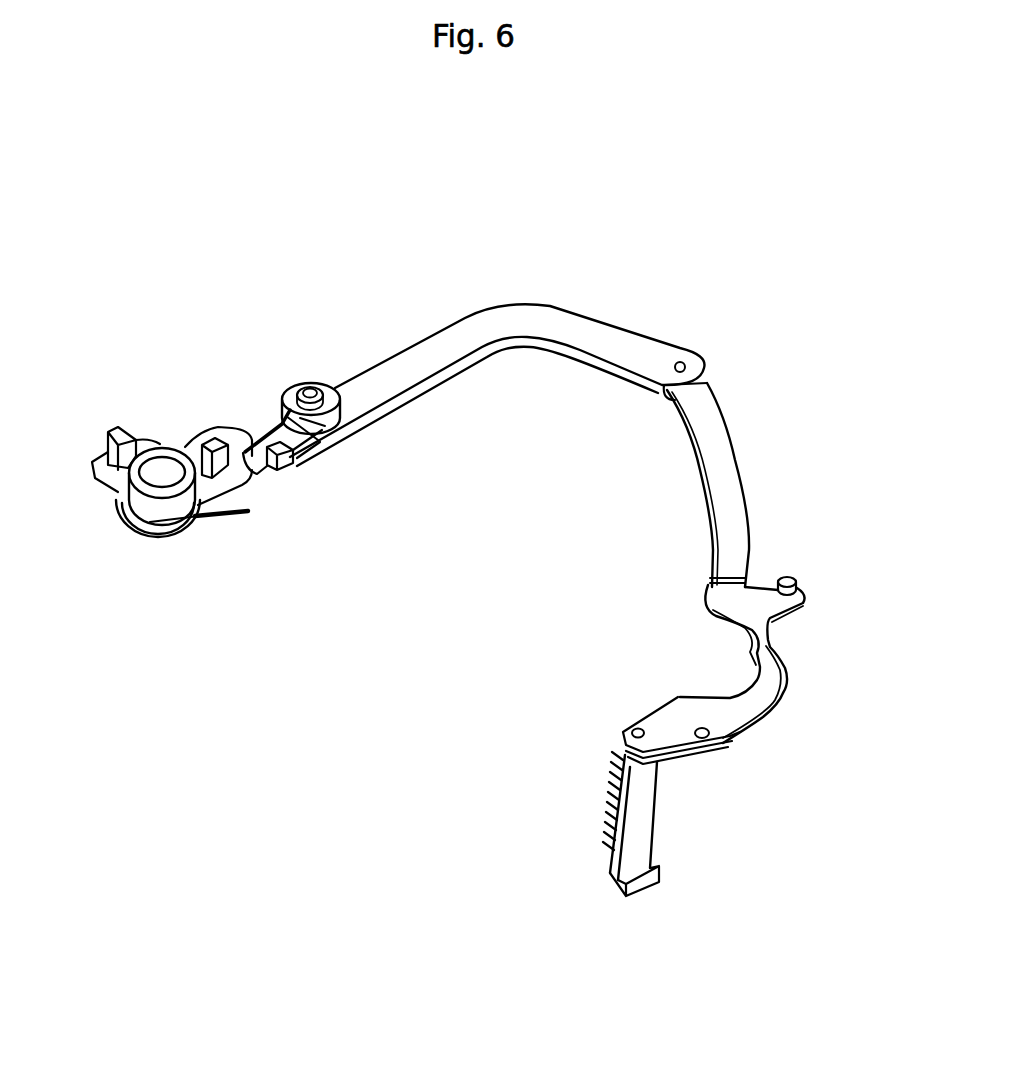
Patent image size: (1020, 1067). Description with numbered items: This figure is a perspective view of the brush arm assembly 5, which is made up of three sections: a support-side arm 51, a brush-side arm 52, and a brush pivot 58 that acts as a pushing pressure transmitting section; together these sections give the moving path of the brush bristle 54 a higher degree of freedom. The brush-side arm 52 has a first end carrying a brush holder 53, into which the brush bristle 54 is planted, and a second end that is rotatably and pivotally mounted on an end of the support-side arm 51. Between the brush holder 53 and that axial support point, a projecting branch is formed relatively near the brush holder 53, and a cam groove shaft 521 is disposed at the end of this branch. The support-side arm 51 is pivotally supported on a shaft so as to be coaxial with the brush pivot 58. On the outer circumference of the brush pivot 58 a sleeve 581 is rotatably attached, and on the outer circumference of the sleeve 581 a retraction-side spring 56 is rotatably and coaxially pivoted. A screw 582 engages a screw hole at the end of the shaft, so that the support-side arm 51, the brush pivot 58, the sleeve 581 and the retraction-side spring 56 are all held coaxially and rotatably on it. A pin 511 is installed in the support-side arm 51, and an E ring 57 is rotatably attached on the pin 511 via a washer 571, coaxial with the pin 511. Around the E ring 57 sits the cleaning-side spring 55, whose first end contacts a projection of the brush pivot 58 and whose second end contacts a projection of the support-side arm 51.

The brush arm assembly 5 is at (738, 216).
The support-side arm 51 is at (492, 326).
The pin 511 is at (311, 390).
The brush-side arm 52 is at (723, 430).
The cam groove shaft 521 is at (787, 577).
The brush holder 53 is at (643, 838).
The brush bristle 54 is at (605, 805).
The cleaning-side spring 55 is at (273, 417).
The retraction-side spring 56 is at (232, 517).
The E ring 57 is at (320, 430).
The washer 571 is at (370, 414).
The brush pivot 58 is at (90, 467).
The sleeve 581 is at (162, 492).
The screw 582 is at (157, 472).